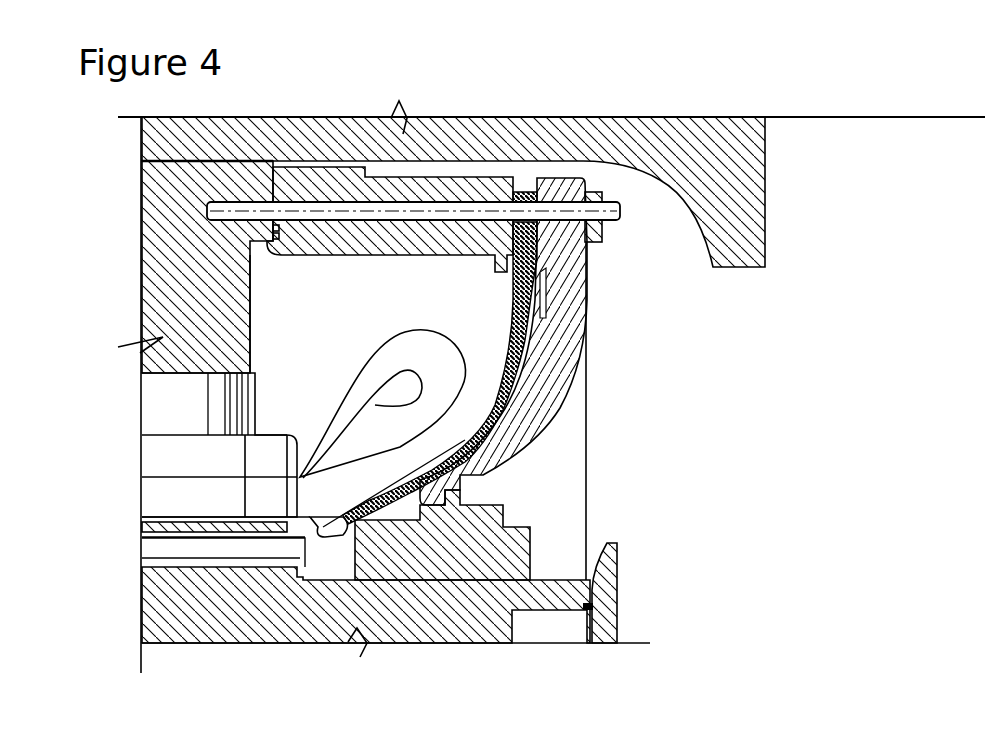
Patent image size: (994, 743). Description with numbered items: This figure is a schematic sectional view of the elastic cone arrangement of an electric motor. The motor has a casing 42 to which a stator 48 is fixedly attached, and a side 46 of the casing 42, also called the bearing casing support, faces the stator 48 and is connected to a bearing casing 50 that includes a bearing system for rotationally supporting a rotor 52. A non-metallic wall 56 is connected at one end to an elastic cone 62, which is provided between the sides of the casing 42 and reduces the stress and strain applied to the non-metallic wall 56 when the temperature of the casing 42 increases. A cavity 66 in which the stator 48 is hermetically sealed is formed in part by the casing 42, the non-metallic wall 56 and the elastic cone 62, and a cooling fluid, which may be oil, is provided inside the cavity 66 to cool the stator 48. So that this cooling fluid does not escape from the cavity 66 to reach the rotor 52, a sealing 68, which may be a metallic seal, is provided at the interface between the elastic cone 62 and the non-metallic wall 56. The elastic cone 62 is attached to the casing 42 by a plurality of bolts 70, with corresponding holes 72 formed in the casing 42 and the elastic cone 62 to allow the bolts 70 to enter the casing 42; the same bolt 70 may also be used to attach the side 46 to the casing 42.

The casing 42 is at (178, 260).
The side 46 is at (555, 339).
The stator 48 is at (165, 498).
The bearing casing 50 is at (507, 561).
The rotor 52 is at (572, 598).
The non-metallic wall 56 is at (287, 522).
The elastic cone 62 is at (518, 373).
The cavity 66 is at (473, 313).
The sealing 68 is at (377, 493).
The bolts 70 is at (612, 210).
The holes 72 is at (447, 204).